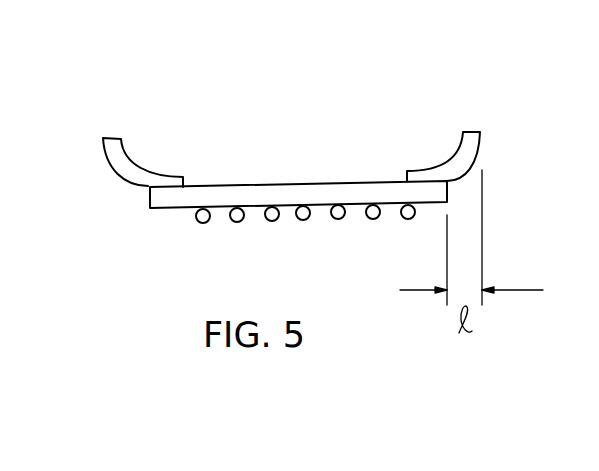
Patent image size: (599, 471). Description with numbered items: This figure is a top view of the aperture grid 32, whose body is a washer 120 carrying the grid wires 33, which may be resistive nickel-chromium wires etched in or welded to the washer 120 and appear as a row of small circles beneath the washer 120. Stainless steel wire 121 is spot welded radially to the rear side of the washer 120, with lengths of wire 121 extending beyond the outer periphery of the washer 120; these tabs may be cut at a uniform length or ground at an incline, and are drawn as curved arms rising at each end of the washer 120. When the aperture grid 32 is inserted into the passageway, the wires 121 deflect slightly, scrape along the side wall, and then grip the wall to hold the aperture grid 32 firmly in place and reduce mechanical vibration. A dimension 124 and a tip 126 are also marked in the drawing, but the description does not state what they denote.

The aperture grid 32 is at (223, 230).
The washer 120 is at (161, 209).
The stainless steel wire 121 is at (480, 148).
The arm tip 126 is at (111, 137).
The wires 33 is at (237, 222).
The gap dimension 124 is at (515, 290).